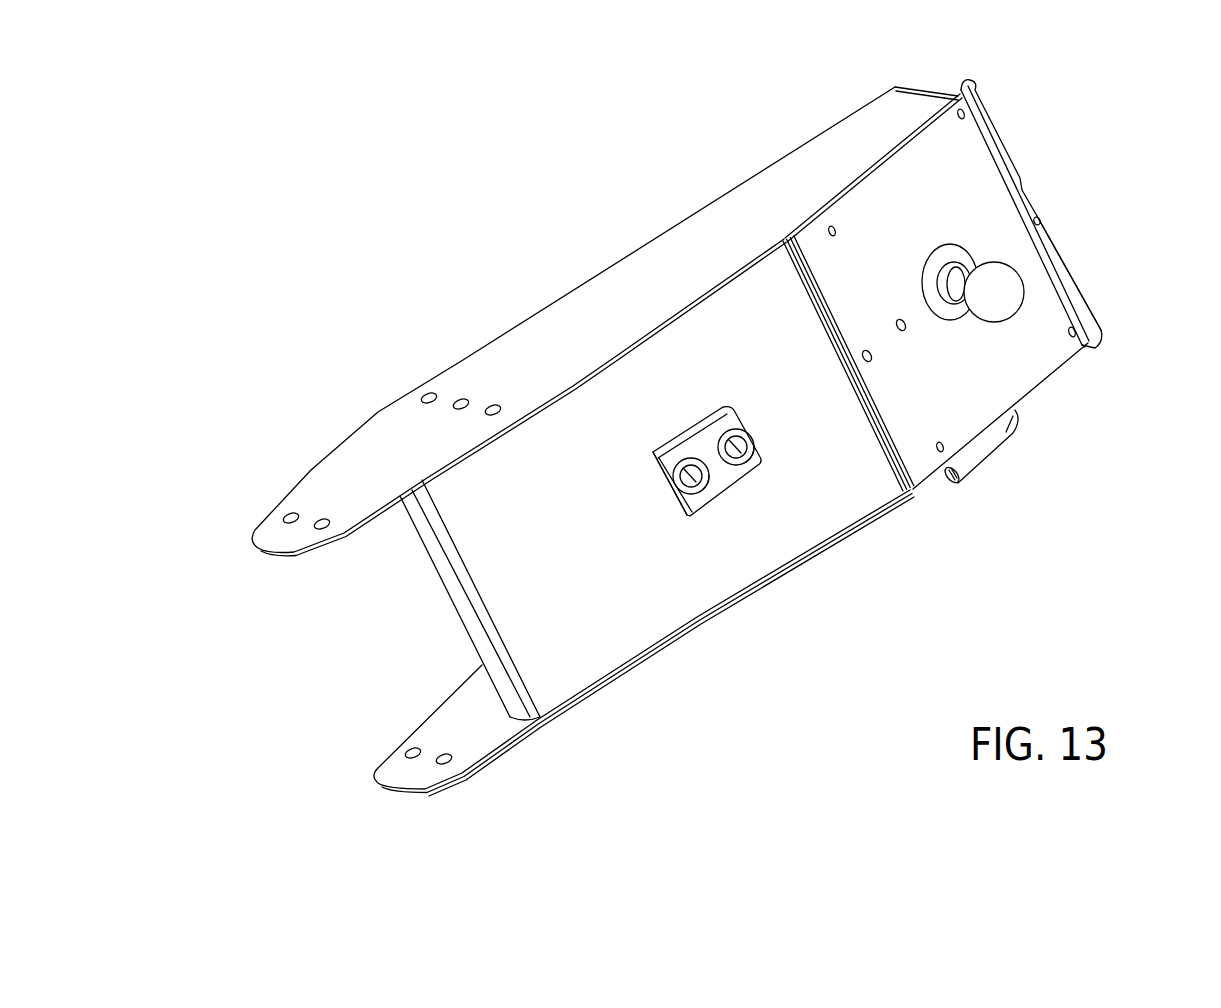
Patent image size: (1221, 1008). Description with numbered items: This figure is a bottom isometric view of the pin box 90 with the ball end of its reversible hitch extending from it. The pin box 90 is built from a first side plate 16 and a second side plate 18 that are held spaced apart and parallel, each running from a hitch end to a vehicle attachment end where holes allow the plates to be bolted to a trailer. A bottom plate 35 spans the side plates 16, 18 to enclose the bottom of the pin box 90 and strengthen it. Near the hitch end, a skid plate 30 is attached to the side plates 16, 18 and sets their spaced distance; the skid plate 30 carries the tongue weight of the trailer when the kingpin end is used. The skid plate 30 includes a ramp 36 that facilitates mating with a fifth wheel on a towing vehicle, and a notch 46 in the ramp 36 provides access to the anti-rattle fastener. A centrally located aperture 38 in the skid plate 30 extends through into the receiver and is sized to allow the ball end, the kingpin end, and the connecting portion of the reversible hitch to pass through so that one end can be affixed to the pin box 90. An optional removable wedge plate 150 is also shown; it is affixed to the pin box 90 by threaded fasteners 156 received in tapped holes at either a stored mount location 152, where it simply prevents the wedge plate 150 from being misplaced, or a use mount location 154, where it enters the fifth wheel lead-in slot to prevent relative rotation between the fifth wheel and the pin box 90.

The pin box 90 is at (303, 312).
The second side plate 18 is at (517, 362).
The first side plate 16 is at (537, 724).
The bottom plate 35 is at (527, 552).
The skid plate 30 is at (1036, 350).
The ramp 36 is at (1069, 282).
The notch 46 is at (1037, 193).
The aperture 38 is at (962, 244).
The use mount location 154 is at (897, 317).
The wedge plate 150 is at (756, 541).
The stored mount location 152 is at (663, 487).
The threaded fasteners 156 is at (694, 482).